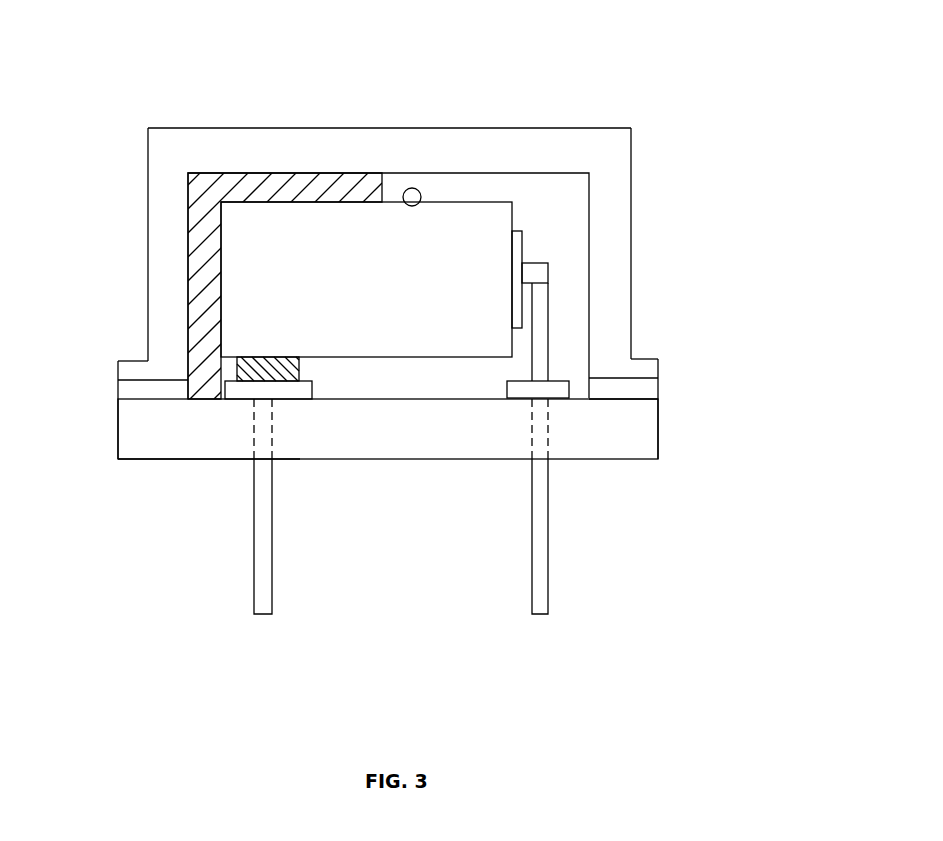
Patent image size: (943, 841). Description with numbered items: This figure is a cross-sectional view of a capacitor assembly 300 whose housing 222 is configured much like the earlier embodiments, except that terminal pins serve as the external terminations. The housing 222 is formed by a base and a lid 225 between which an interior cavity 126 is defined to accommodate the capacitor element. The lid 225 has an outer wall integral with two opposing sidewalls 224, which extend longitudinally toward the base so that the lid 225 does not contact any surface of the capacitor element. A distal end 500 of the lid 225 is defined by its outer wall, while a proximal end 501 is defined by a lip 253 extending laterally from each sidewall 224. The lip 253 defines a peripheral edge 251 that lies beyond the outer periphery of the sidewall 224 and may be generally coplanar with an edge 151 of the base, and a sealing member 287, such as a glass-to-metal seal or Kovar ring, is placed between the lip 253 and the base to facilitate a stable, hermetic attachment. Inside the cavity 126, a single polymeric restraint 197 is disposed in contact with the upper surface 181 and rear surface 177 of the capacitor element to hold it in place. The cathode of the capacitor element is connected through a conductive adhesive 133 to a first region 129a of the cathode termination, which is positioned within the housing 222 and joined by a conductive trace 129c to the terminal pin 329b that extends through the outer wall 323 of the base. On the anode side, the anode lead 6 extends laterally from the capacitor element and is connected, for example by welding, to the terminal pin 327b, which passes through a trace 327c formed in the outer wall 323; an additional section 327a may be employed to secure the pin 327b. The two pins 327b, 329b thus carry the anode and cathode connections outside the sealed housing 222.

The capacitor assembly 300 is at (718, 91).
The distal end 500 is at (517, 128).
The lid 225 is at (413, 124).
The sidewall 224 is at (168, 228).
The interior cavity 126 is at (552, 209).
The polymeric restraint 197 is at (307, 180).
The rear surface 177 is at (221, 277).
The upper surface 181 is at (413, 206).
The anode lead 6 is at (530, 270).
The conductive adhesive 133 is at (299, 370).
The first region of cathode termination 129a is at (238, 400).
The conductive trace 129c is at (263, 433).
The terminal pin 329b is at (260, 573).
The additional section 327a is at (518, 400).
The trace 327c is at (540, 433).
The terminal pin 327b is at (538, 537).
The outer wall 323 is at (383, 437).
The lip 253 is at (137, 370).
The peripheral edge 251 is at (118, 368).
The sealing member 287 is at (125, 390).
The edge of the base 151 is at (115, 450).
The housing 222 is at (104, 489).
The proximal end 501 is at (640, 400).